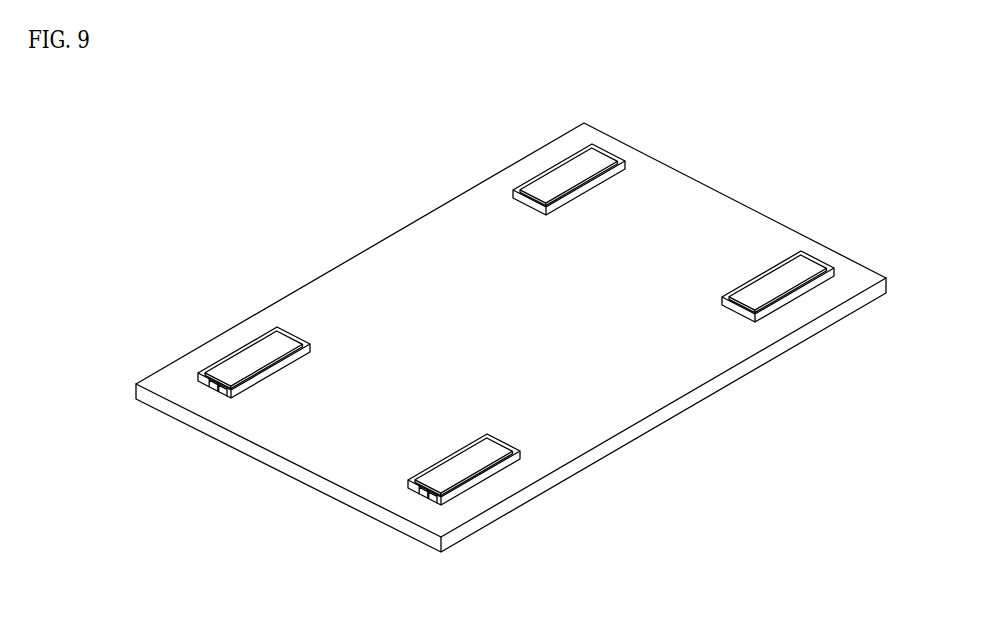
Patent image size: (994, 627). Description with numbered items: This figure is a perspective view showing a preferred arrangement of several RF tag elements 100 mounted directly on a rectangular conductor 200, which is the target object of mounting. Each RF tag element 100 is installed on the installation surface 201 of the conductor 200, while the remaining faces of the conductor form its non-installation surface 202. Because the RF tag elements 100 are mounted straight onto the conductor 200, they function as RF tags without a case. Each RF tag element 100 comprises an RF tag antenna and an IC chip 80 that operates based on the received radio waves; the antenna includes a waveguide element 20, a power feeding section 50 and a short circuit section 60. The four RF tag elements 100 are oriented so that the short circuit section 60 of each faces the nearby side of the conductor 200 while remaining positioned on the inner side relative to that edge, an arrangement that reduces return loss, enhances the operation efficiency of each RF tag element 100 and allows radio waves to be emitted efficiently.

The waveguide element 20 is at (537, 192).
The power feeding section 50 is at (210, 388).
The short circuit section 60 is at (223, 392).
The IC chip 80 is at (603, 152).
The RF tag element 100 is at (513, 334).
The conductor 200 is at (511, 337).
The installation surface 201 is at (637, 369).
The non-installation surface 202 is at (622, 448).